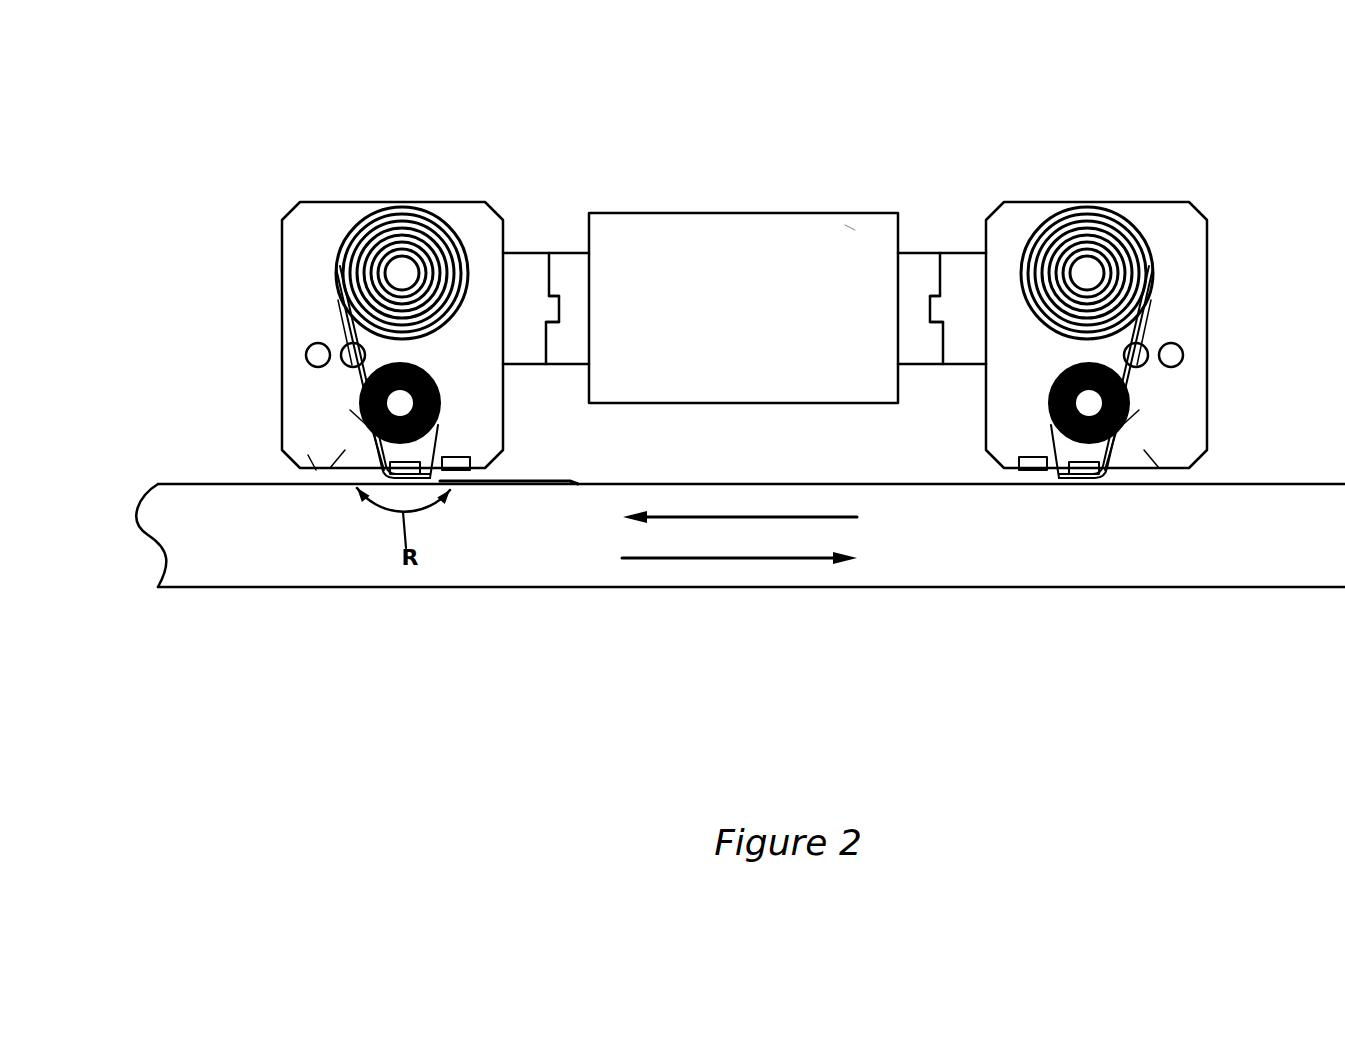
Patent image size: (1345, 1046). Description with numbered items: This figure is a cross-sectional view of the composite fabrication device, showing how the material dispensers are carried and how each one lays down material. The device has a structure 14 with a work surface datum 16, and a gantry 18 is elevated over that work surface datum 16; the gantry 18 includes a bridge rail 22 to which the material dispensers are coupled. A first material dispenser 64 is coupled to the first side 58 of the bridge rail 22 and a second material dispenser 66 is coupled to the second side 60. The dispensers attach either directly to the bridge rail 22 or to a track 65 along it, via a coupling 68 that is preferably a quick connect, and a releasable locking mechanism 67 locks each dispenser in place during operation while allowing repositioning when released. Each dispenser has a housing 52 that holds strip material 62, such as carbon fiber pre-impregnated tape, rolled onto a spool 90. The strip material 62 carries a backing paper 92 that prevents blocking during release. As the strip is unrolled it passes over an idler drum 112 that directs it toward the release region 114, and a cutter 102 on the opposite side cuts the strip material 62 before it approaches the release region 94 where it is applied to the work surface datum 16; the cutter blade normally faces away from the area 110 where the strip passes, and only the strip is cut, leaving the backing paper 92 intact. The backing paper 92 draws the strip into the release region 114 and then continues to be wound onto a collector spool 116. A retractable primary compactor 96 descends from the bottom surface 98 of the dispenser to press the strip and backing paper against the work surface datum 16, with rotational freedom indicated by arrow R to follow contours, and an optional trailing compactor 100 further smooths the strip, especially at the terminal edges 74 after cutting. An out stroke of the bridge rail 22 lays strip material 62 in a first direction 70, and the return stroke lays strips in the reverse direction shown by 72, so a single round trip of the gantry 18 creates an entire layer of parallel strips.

The structure 14 is at (228, 538).
The work surface datum 16 is at (172, 482).
The gantry 18 is at (752, 213).
The bridge rail 22 is at (850, 227).
The material dispenser housing 52 is at (280, 243).
The first side 58 is at (588, 223).
The second side 60 is at (900, 227).
The strip material 62 is at (397, 230).
The first material dispenser 64 is at (297, 203).
The track 65 is at (560, 297).
The second material dispenser 66 is at (1193, 203).
The locking mechanism 67 is at (520, 253).
The coupling 68 is at (547, 295).
The first direction 70 is at (752, 517).
The return stroke direction 72 is at (765, 560).
The terminal edges 74 is at (588, 490).
The spool 90 is at (388, 273).
The backing paper 92 is at (445, 410).
The release region 94 is at (470, 455).
The primary compactor 96 is at (453, 480).
The bottom surface 98 is at (343, 455).
The trailing compactor 100 is at (477, 483).
The cutter 102 is at (304, 358).
The area 110 is at (333, 362).
The idler drum 112 is at (367, 355).
The release region 114 is at (347, 468).
The collector spool 116 is at (355, 410).